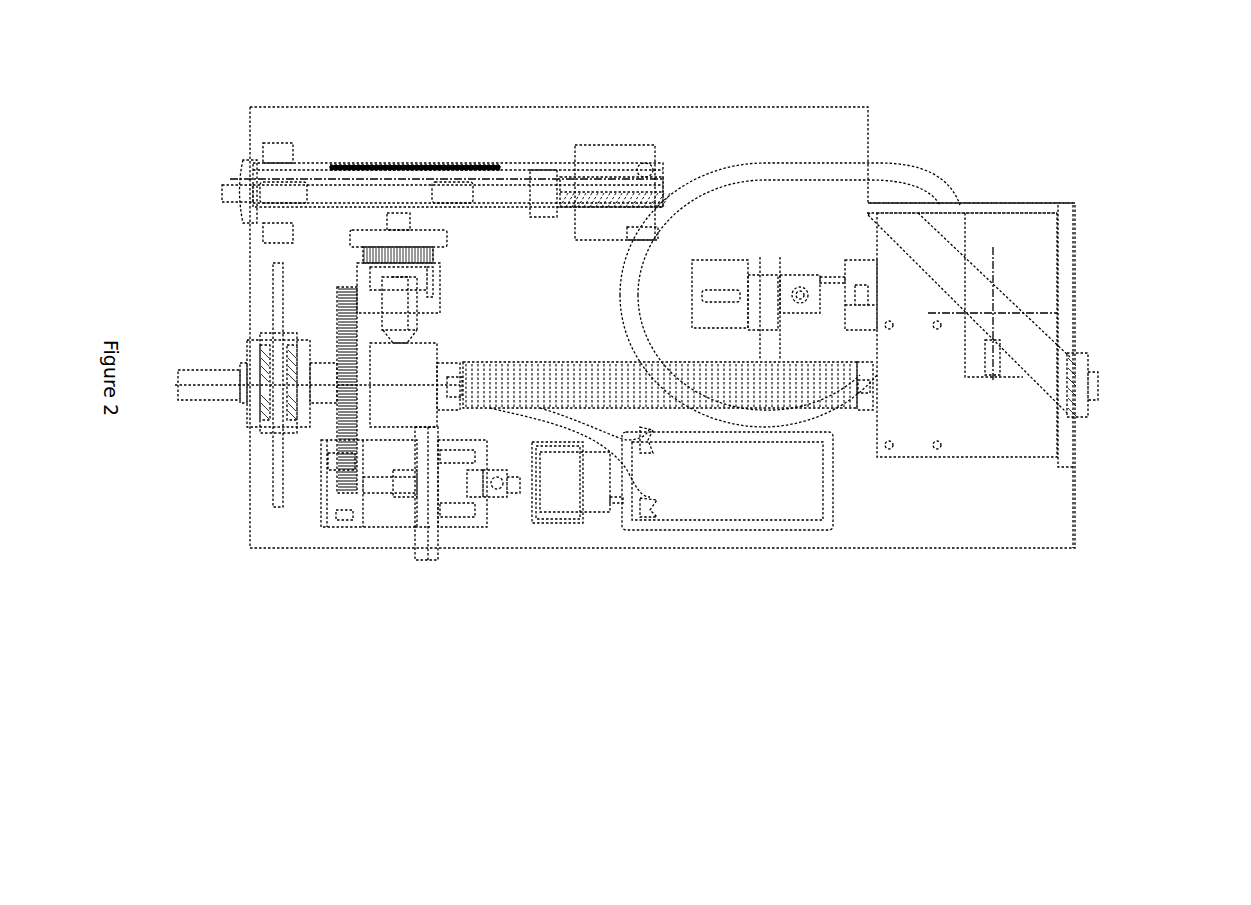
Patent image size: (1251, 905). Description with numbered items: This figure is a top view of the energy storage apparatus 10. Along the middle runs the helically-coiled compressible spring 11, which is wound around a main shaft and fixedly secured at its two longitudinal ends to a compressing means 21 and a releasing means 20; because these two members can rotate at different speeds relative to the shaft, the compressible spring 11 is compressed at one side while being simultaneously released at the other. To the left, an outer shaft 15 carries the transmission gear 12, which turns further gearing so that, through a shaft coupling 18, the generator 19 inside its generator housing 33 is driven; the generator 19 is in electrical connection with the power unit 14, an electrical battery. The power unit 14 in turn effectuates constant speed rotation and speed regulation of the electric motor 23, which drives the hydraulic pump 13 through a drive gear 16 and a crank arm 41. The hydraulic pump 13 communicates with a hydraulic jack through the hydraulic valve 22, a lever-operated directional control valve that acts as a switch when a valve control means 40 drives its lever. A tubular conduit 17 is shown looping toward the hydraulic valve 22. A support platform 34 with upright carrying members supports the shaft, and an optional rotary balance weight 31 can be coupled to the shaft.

The energy storage apparatus 10 is at (1148, 188).
The compressible spring 11 is at (668, 492).
The transmission gear 12 is at (345, 485).
The hydraulic pump 13 is at (377, 190).
The power unit 14 is at (725, 480).
The outer shaft 15 is at (223, 390).
The drive gear 16 is at (345, 205).
The tubular conduit 17 is at (880, 175).
The shaft coupling 18 is at (496, 500).
The generator 19 is at (558, 550).
The releasing means 20 is at (447, 380).
The compressing means 21 is at (868, 392).
The hydraulic valve 22 is at (820, 255).
The electric motor 23 is at (380, 290).
The rotary balance weight 31 is at (424, 545).
The generator housing 33 is at (538, 520).
The support platform 34 is at (387, 510).
The valve control means 40 is at (858, 278).
The crank arm 41 is at (430, 235).